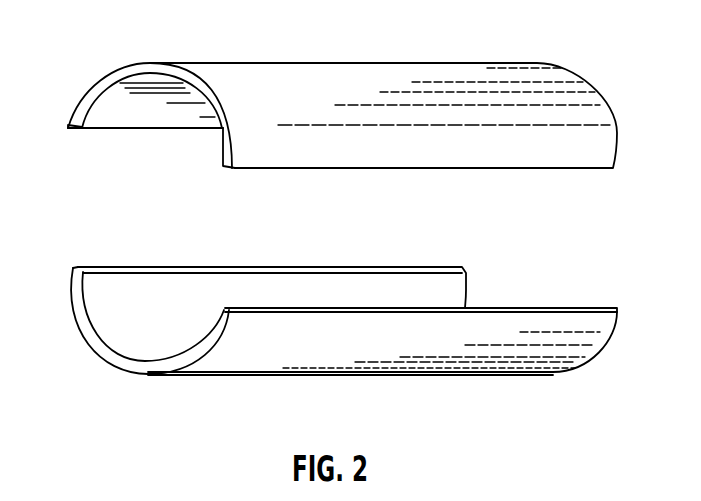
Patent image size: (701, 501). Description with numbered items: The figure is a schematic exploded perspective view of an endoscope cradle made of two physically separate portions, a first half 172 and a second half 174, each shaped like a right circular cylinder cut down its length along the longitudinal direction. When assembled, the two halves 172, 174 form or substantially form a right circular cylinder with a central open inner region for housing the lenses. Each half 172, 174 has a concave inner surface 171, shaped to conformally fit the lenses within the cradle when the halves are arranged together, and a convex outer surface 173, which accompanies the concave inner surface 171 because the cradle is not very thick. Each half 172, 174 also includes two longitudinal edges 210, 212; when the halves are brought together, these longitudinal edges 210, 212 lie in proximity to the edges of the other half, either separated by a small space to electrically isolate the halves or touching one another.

The half 172 is at (513, 53).
The longitudinal edge 210 is at (605, 170).
The longitudinal edge 212 is at (148, 132).
The concave inner surface 171 is at (140, 358).
The convex outer surface 173 is at (300, 366).
The half 174 is at (489, 381).